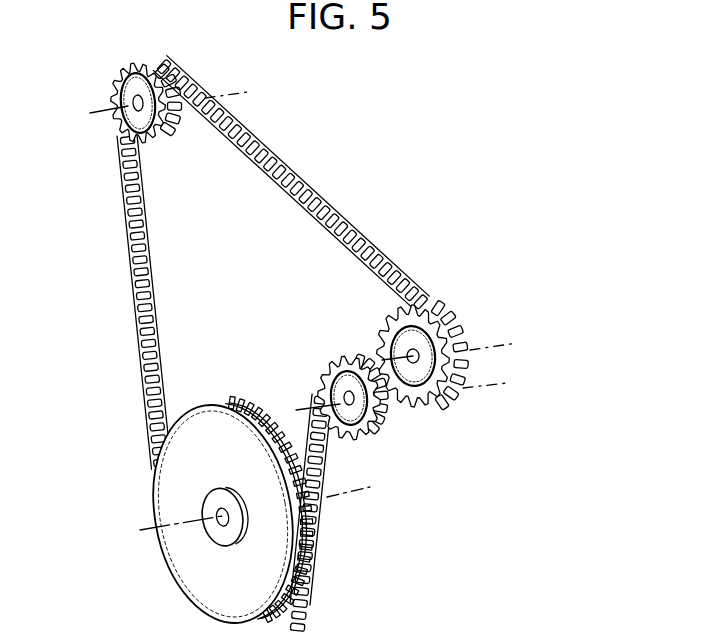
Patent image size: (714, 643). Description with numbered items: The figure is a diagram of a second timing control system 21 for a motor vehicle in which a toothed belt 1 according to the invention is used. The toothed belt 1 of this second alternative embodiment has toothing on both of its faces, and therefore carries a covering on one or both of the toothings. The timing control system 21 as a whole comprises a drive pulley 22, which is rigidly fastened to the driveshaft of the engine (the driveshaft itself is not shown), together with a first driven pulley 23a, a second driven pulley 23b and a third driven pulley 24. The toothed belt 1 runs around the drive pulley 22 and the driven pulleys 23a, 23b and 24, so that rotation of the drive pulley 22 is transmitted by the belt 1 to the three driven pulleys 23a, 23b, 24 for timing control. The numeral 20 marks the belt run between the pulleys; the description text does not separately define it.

The toothed belt 1 is at (271, 152).
The chain 20 is at (130, 282).
The timing control system 21 is at (377, 204).
The drive pulley 22 is at (183, 478).
The first driven pulley 23a is at (132, 90).
The second driven pulley 23b is at (358, 422).
The third driven pulley 24 is at (450, 313).